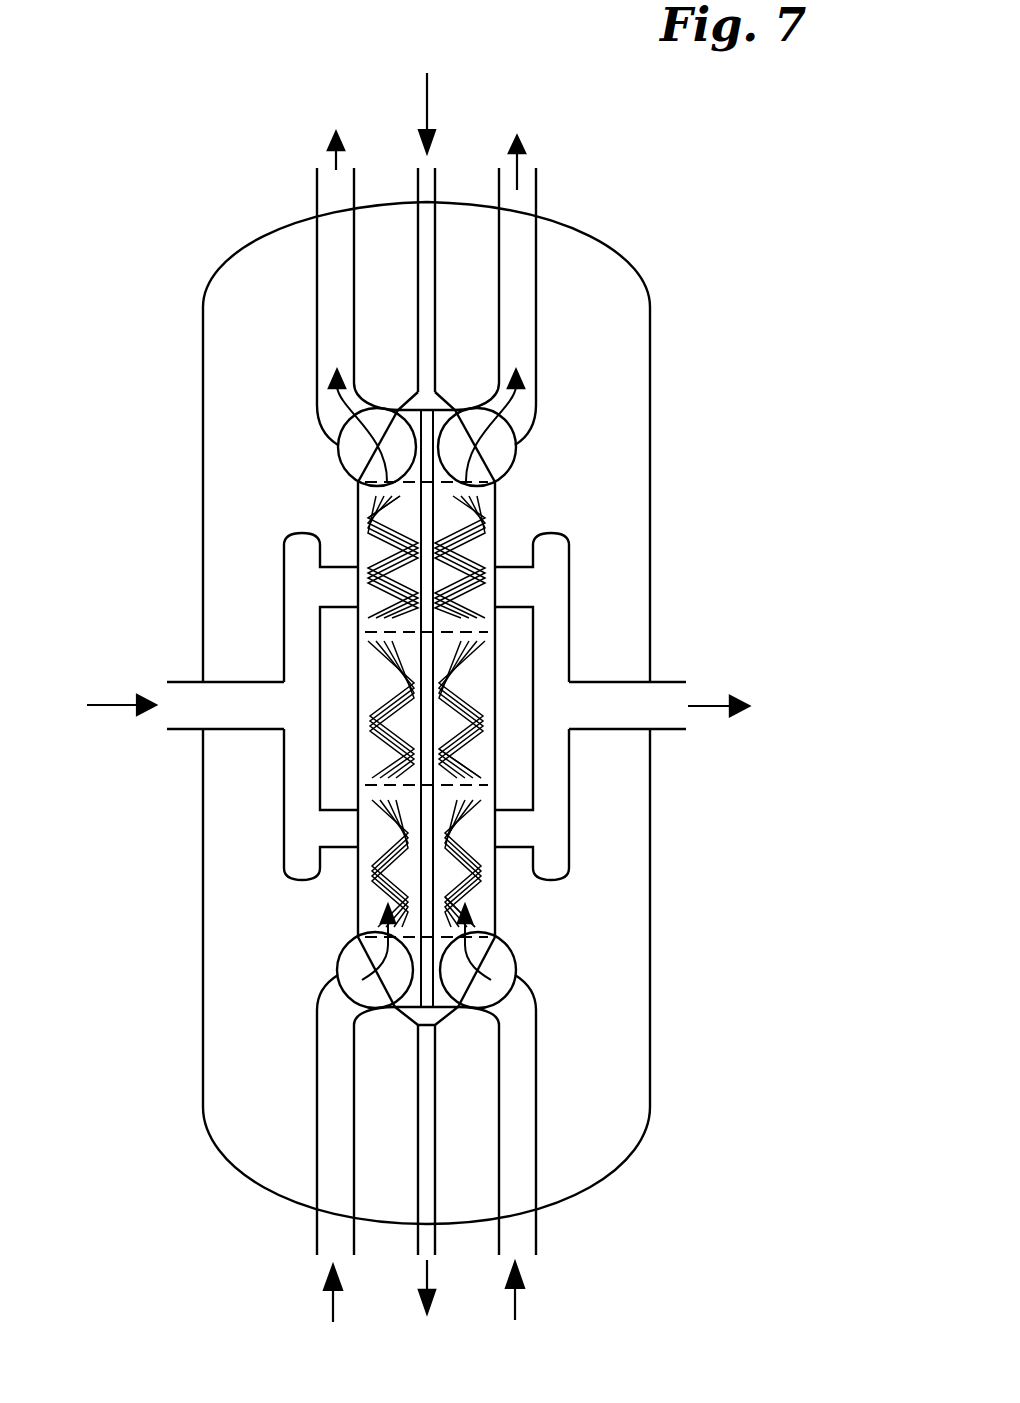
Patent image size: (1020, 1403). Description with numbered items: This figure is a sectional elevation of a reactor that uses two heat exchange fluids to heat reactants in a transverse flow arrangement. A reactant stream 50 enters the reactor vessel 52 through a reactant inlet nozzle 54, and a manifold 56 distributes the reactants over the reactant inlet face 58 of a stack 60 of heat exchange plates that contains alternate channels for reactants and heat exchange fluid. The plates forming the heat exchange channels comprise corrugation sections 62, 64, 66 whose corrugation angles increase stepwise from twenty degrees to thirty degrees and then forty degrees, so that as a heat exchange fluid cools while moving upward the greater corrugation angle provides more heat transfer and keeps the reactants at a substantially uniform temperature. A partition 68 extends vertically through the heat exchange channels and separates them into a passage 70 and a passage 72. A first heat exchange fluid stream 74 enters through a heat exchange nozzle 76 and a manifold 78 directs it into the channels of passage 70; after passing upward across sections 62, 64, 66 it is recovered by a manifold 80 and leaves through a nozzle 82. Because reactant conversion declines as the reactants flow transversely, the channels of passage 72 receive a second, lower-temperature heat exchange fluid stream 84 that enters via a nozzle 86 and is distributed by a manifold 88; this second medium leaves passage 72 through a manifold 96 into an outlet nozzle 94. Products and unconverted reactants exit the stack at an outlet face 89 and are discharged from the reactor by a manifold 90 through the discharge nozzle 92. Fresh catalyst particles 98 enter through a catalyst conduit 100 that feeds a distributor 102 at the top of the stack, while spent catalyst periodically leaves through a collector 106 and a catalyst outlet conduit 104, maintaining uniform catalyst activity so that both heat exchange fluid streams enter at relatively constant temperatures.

The reactant stream 50 is at (112, 702).
The reactor vessel 52 is at (640, 290).
The reactant inlet nozzle 54 is at (178, 731).
The manifold 56 is at (284, 592).
The reactant inlet face 58 is at (356, 868).
The stack 60 is at (345, 907).
The corrugation section 62 is at (383, 840).
The corrugation section 64 is at (395, 660).
The corrugation section 66 is at (382, 553).
The partition 68 is at (433, 510).
The passage 70 is at (368, 528).
The passage 72 is at (485, 763).
The heat exchange fluid stream 74 is at (332, 1305).
The heat exchange nozzle 76 is at (317, 1236).
The manifold 78 is at (386, 1008).
The manifold 80 is at (338, 452).
The nozzle 82 is at (317, 298).
The heat exchange fluid stream 84 is at (517, 1303).
The nozzle 86 is at (534, 1108).
The manifold 88 is at (514, 962).
The outlet face 89 is at (493, 862).
The manifold 90 is at (569, 612).
The outlet nozzle 92 is at (680, 731).
The outlet nozzle 94 is at (537, 356).
The manifold 96 is at (515, 455).
The fresh catalyst particles 98 is at (428, 88).
The catalyst conduit 100 is at (437, 183).
The distributor 102 is at (448, 402).
The catalyst outlet conduit 104 is at (437, 1233).
The collector 106 is at (445, 1015).